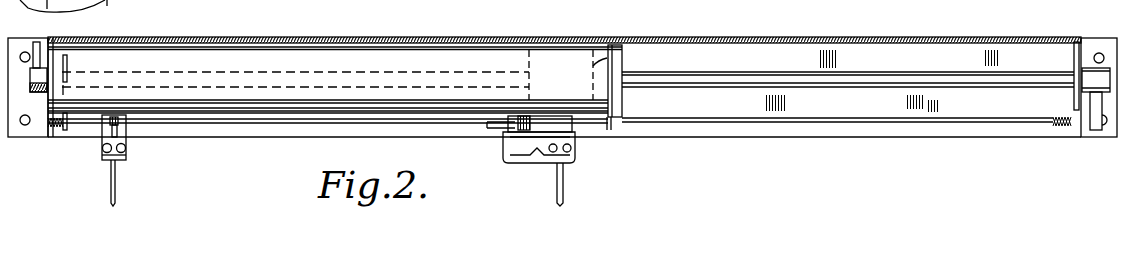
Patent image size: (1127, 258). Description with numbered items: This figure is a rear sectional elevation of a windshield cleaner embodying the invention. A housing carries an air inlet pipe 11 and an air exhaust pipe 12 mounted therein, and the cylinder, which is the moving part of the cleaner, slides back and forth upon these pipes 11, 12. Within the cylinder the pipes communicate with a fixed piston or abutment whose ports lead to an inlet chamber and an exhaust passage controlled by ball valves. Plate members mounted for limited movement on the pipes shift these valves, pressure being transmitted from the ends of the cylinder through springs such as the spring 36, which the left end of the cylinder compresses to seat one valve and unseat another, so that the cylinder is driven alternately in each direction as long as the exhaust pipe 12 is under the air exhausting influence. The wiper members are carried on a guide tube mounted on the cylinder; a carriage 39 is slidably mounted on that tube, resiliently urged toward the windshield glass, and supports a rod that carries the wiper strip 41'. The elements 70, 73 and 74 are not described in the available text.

The air inlet pipe 11 is at (62, 84).
The air exhaust pipe 12 is at (1043, 87).
The spring 36 is at (345, 123).
The carriage 39 is at (576, 149).
The wiper strip 41' is at (580, 184).
The top rail 70 is at (546, 31).
The slide plate 73 is at (579, 60).
The rod 74 is at (624, 44).